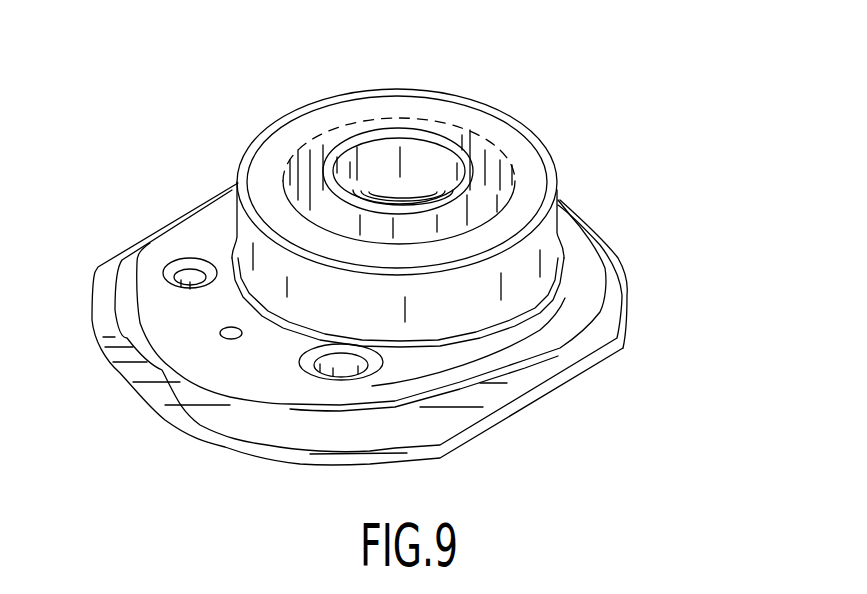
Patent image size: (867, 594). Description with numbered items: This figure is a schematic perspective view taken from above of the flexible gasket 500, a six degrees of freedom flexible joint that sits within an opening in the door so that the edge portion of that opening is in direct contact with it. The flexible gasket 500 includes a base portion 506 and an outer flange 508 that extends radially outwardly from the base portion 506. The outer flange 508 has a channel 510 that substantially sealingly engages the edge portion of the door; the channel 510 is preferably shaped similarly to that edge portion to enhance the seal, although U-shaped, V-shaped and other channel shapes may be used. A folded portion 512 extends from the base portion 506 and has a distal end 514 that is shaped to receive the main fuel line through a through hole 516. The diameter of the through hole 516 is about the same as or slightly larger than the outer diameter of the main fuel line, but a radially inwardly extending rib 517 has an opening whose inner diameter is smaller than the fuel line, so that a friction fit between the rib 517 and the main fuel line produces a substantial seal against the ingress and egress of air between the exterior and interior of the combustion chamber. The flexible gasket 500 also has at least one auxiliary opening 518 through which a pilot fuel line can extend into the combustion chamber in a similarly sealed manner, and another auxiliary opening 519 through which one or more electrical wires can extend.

The flexible gasket 500 is at (626, 137).
The base portion 506 is at (563, 377).
The outer flange 508 is at (560, 347).
The channel 510 is at (480, 390).
The folded portion 512 is at (253, 141).
The distal end 514 is at (337, 157).
The through hole 516 is at (432, 157).
The radially inwardly extending rib 517 is at (405, 198).
The auxiliary opening 518 is at (350, 373).
The auxiliary opening 519 is at (222, 335).